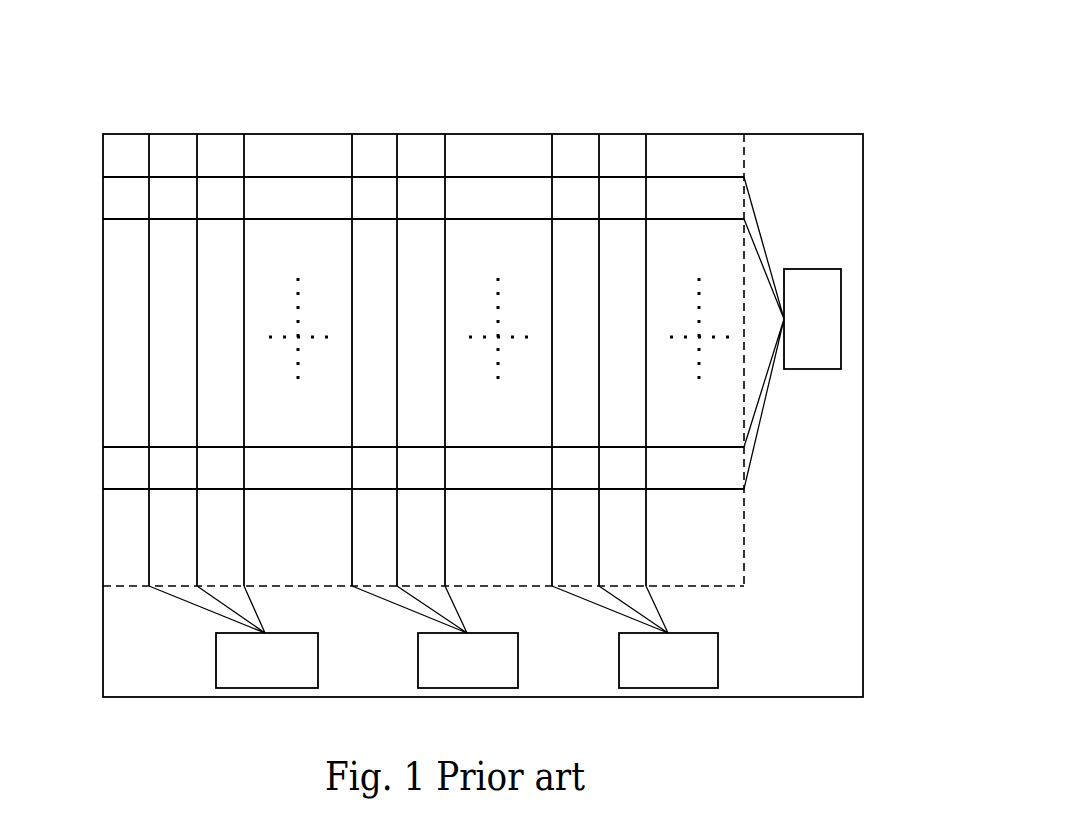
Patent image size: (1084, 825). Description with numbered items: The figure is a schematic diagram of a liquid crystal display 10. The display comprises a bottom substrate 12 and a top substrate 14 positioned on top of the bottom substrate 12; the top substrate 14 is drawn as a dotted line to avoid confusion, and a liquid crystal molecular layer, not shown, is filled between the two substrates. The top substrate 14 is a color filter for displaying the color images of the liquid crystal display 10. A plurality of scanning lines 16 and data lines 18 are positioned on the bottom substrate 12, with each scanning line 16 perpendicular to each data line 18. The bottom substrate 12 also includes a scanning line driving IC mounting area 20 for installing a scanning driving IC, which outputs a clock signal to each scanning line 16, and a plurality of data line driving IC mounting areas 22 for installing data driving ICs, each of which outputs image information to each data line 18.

The liquid crystal display 10 is at (840, 60).
The bottom substrate 12 is at (830, 134).
The top substrate 14 is at (746, 157).
The scanning lines 16 is at (118, 178).
The data lines 18 is at (149, 152).
The scanning line driving IC mounting area 20 is at (812, 268).
The data line driving IC mounting areas 22 is at (262, 690).